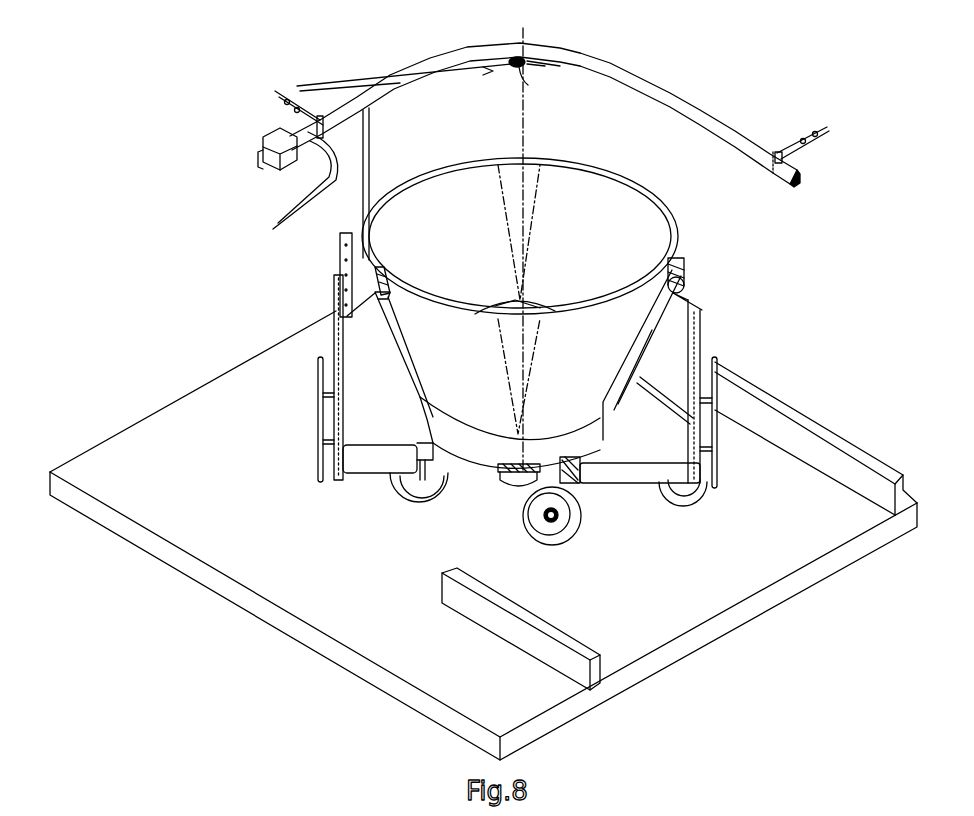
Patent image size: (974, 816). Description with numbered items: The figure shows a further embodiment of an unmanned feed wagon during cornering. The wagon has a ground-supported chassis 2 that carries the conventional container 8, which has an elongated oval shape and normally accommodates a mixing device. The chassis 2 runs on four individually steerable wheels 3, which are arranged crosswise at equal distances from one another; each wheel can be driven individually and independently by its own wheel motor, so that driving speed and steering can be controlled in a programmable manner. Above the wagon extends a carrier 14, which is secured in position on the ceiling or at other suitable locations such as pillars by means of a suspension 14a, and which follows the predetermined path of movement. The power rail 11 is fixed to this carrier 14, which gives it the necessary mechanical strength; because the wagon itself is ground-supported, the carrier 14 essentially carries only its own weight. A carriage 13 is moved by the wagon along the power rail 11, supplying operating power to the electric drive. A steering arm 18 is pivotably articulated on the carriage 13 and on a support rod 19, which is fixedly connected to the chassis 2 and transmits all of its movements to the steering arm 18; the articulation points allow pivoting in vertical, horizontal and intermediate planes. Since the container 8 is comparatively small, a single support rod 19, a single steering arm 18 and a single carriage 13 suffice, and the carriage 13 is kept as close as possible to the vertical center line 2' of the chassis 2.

The chassis 2 is at (517, 409).
The vertical center line of the chassis 2' is at (530, 249).
The steered wheels 3 is at (397, 490).
The container 8 is at (657, 238).
The power rail 11 is at (668, 93).
The carriage 13 is at (514, 73).
The carrier 14 is at (605, 57).
The suspension 14a is at (273, 92).
The steering arm 18 is at (477, 75).
The support rod 19 is at (362, 203).